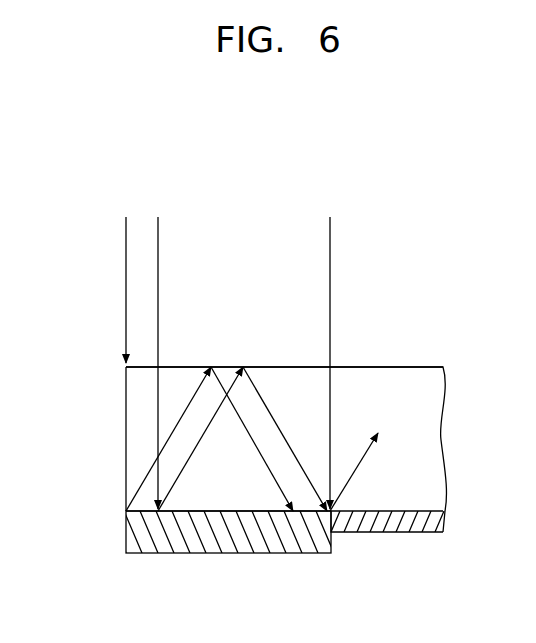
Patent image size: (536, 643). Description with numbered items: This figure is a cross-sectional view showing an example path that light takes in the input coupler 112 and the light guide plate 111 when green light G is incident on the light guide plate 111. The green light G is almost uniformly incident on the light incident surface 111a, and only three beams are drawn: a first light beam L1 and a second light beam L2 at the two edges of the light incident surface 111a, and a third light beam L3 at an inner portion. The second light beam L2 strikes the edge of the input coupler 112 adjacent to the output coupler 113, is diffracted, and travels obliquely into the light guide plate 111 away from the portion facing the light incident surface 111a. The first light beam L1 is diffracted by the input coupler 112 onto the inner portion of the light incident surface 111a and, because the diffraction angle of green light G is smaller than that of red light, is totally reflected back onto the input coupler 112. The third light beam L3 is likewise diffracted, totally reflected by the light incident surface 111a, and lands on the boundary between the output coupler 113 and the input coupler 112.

The light guide plate 111 is at (134, 441).
The light incident surface 111a is at (186, 366).
The input coupler 112 is at (135, 529).
The output coupler 113 is at (387, 524).
The first light beam L1 is at (246, 478).
The second light beam L2 is at (357, 351).
The third light beam L3 is at (283, 432).
The green light G is at (226, 229).